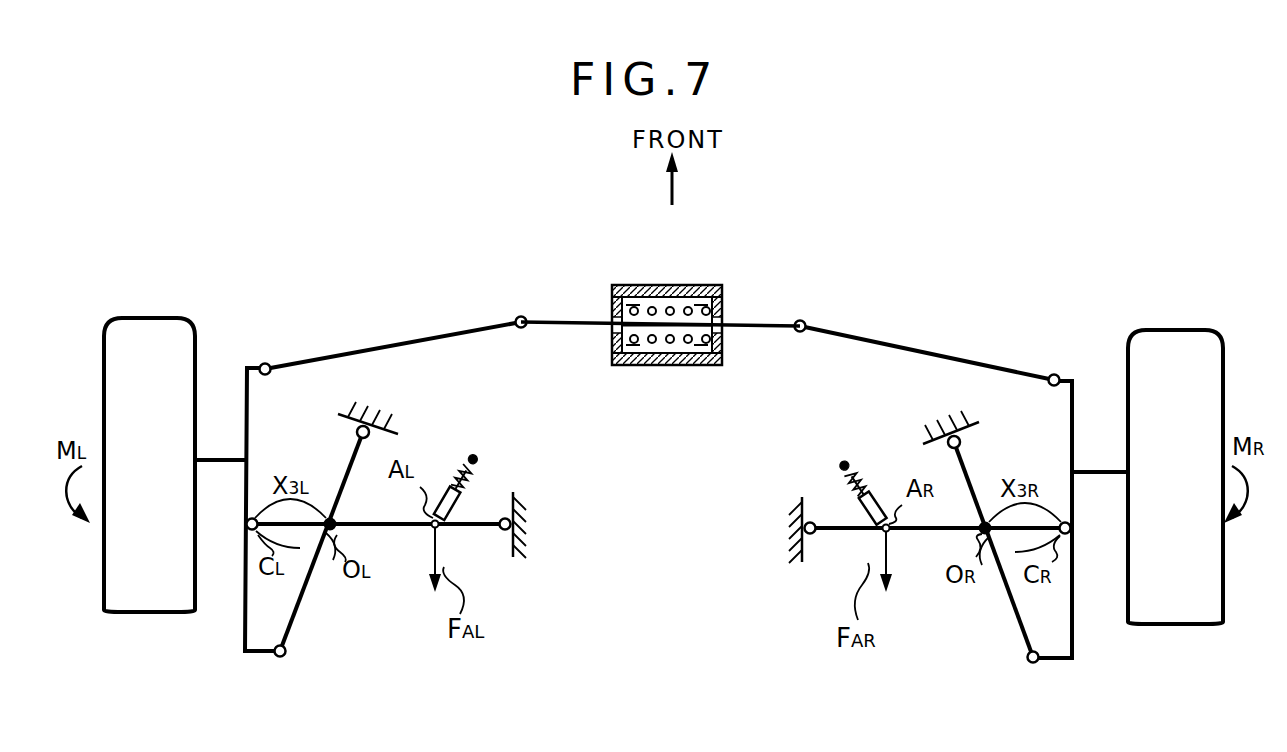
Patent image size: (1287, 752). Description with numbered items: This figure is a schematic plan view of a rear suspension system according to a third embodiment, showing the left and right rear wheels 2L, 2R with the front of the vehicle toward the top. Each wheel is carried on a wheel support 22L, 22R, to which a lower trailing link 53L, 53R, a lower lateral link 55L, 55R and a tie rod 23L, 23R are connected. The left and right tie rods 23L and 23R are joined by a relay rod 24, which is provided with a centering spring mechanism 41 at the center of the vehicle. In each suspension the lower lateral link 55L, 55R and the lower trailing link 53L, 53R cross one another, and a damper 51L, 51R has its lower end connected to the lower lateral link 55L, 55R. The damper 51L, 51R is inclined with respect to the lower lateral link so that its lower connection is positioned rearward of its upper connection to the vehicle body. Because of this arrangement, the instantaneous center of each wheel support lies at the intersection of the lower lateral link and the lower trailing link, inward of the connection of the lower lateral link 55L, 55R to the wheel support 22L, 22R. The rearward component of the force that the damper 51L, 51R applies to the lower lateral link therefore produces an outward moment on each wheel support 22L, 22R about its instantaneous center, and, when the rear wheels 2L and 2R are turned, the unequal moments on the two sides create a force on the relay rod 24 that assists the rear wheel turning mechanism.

The left rear wheel 2L is at (153, 593).
The right rear wheel 2R is at (1193, 604).
The left wheel support 22L is at (243, 632).
The right wheel support 22R is at (1073, 633).
The left tie rod 23L is at (399, 343).
The right tie rod 23R is at (943, 345).
The relay rod 24 is at (771, 322).
The centering spring mechanism 41 is at (684, 268).
The left damper 51L is at (500, 442).
The right damper 51R is at (830, 440).
The left lower trailing link 53L is at (292, 622).
The right lower trailing link 53R is at (1020, 626).
The left lower lateral link 55L is at (505, 532).
The right lower lateral link 55R is at (835, 535).